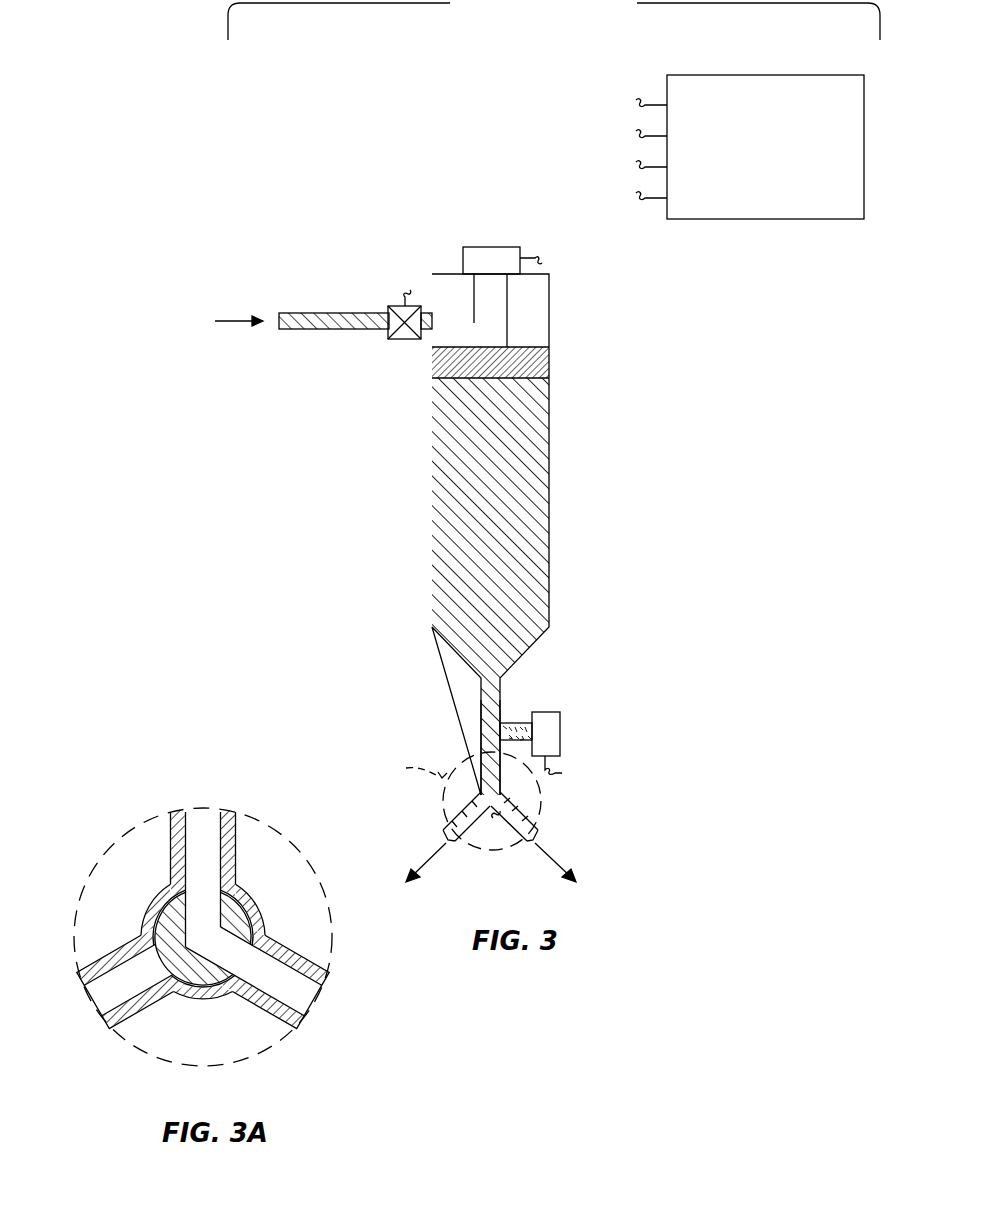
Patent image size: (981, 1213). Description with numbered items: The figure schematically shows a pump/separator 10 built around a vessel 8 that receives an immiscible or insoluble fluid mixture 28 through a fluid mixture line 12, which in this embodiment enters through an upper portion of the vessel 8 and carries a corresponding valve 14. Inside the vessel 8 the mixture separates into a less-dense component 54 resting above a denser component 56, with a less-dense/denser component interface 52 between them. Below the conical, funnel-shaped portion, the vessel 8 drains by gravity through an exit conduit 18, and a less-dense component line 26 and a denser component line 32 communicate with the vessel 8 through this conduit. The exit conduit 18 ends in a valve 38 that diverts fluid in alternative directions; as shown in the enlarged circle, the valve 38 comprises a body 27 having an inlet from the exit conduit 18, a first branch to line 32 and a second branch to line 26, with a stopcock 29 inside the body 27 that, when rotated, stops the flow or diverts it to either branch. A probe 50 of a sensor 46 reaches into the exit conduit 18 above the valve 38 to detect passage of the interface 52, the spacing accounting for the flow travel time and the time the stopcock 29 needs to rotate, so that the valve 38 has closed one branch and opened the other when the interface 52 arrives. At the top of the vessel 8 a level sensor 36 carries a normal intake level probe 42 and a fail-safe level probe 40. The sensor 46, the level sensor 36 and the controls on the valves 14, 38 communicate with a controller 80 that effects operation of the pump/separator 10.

In FIG. 3, the vessel 8 is at (432, 455).
In FIG. 3, the pump/separator 10 is at (590, 452).
In FIG. 3, the immiscible or insoluble fluid mixture line 12 is at (326, 322).
In FIG. 3, the valve 14 is at (399, 309).
In FIG. 3, the exit conduit 18 is at (481, 740).
In FIG. 3, the less-dense component line 26 is at (446, 829).
In FIG. 3A, the less-dense component line 26 is at (134, 1010).
In FIG. 3A, the body 27 is at (170, 908).
In FIG. 3, the immiscible or insoluble fluid mixture 28 is at (506, 802).
In FIG. 3A, the stopcock 29 is at (167, 915).
In FIG. 3, the denser component line 32 is at (539, 826).
In FIG. 3A, the denser component line 32 is at (293, 1019).
In FIG. 3, the level sensor 36 is at (500, 258).
In FIG. 3A, the valve 38 is at (262, 902).
In FIG. 3, the fail-safe level probe 40 is at (474, 292).
In FIG. 3, the normal intake level probe 42 is at (507, 293).
In FIG. 3, the sensor 46 is at (553, 726).
In FIG. 3, the probe 50 is at (501, 730).
In FIG. 3, the less-dense/denser component interface 52 is at (432, 378).
In FIG. 3, the less-dense component 54 is at (528, 340).
In FIG. 3, the denser component 56 is at (527, 598).
In FIG. 3, the controller 80 is at (755, 169).